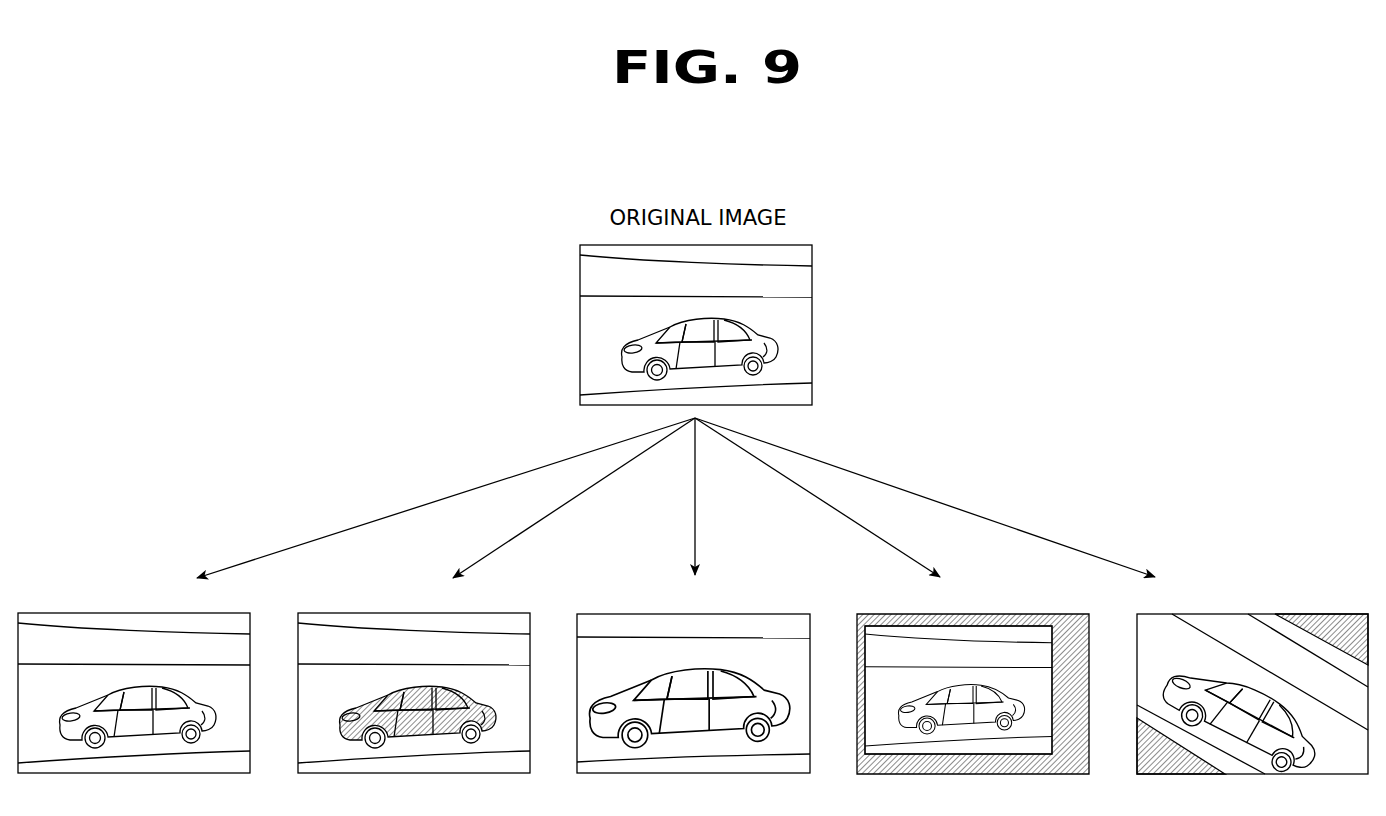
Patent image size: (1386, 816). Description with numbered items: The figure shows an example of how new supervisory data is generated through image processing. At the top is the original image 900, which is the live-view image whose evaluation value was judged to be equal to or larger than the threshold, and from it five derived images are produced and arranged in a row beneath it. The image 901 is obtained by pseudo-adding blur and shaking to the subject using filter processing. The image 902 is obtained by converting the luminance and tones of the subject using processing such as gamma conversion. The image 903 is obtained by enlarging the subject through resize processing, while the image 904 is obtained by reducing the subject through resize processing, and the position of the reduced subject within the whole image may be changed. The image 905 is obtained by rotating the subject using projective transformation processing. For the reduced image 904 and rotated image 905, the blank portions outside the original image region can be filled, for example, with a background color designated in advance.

The image 900 is at (813, 276).
The image 901 is at (68, 613).
The image 902 is at (342, 613).
The image 903 is at (762, 614).
The image 904 is at (1040, 614).
The image 905 is at (1336, 614).